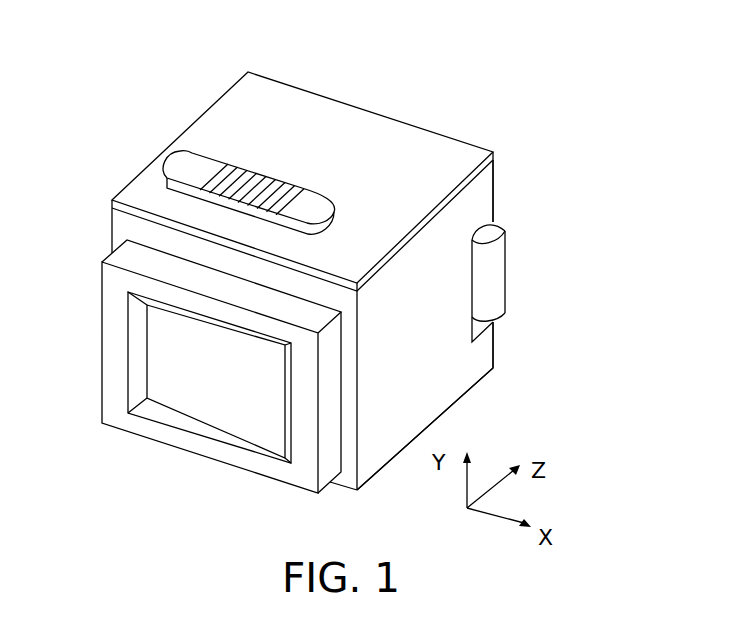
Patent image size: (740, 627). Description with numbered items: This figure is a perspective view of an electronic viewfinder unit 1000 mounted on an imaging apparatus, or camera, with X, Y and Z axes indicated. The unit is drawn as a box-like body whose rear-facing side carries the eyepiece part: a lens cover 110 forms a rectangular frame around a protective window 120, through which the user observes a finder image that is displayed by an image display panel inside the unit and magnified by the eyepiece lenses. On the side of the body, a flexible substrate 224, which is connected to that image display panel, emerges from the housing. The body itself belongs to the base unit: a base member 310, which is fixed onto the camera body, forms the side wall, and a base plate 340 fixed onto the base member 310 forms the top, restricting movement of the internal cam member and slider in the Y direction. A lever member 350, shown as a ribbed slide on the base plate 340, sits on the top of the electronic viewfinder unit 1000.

The electronic viewfinder unit 1000 is at (381, 80).
The base plate 340 is at (413, 142).
The base member 310 is at (470, 207).
The flexible substrate 224 is at (490, 267).
The lever member 350 is at (202, 170).
The lens cover 110 is at (135, 420).
The protective window 120 is at (227, 393).